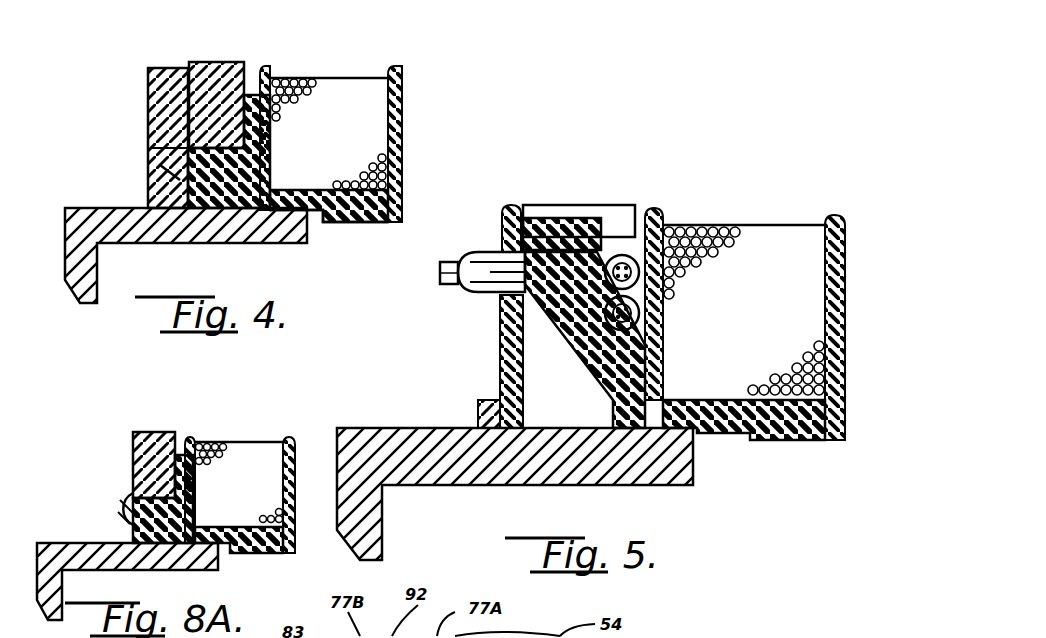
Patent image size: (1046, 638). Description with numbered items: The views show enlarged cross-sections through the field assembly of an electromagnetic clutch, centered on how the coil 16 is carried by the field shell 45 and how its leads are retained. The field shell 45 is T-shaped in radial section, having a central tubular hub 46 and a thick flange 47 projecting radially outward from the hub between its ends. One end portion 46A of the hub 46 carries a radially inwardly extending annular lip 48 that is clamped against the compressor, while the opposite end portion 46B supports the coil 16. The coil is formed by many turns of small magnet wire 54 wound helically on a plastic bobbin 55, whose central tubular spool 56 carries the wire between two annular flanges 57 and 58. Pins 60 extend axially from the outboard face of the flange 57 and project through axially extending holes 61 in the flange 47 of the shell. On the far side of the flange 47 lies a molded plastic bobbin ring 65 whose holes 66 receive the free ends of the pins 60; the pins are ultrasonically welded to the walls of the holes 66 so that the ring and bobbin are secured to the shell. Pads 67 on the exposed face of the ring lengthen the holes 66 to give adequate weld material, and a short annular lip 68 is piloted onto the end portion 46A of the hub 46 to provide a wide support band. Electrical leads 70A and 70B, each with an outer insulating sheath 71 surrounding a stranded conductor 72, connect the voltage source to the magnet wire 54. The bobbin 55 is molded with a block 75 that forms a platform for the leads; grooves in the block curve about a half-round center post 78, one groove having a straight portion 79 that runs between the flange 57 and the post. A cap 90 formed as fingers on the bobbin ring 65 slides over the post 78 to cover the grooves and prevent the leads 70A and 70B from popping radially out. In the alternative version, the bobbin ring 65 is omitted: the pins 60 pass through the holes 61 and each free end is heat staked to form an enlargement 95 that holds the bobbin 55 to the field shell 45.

In FIG. 5, the coil 16 is at (780, 222).
In FIG. 4, the field shell 45 is at (216, 61).
In FIG. 5, the field shell 45 is at (560, 487).
In FIG. 8A, the field shell 45 is at (90, 542).
In FIG. 4, the central tubular hub 46 is at (218, 238).
In FIG. 4, the end portion of the hub 46A is at (85, 207).
In FIG. 5, the end portion of the hub 46A is at (405, 427).
In FIG. 4, the end portion of the hub 46B is at (282, 244).
In FIG. 5, the end portion of the hub 46B is at (650, 487).
In FIG. 4, the flange 47 is at (198, 112).
In FIG. 5, the flange 47 is at (612, 205).
In FIG. 8A, the flange 47 is at (133, 445).
In FIG. 4, the annular lip 48 is at (65, 258).
In FIG. 4, the magnet wire 54 is at (292, 80).
In FIG. 5, the magnet wire 54 is at (700, 226).
In FIG. 4, the bobbin 55 is at (404, 152).
In FIG. 5, the bobbin 55 is at (826, 442).
In FIG. 8A, the bobbin 55 is at (214, 527).
In FIG. 4, the central tubular spool 56 is at (308, 190).
In FIG. 5, the central tubular spool 56 is at (690, 398).
In FIG. 4, the flange 57 is at (268, 70).
In FIG. 5, the flange 57 is at (661, 215).
In FIG. 4, the flange 58 is at (404, 84).
In FIG. 5, the flange 58 is at (838, 218).
In FIG. 4, the pins 60 is at (186, 188).
In FIG. 8A, the holes 61 is at (130, 500).
In FIG. 4, the bobbin ring 65 is at (147, 90).
In FIG. 5, the bobbin ring 65 is at (502, 213).
In FIG. 4, the holes 66 is at (158, 166).
In FIG. 4, the pads 67 is at (155, 148).
In FIG. 5, the annular lip 68 is at (485, 400).
In FIG. 5, the electrical lead 70A is at (612, 322).
In FIG. 5, the electrical lead 70B is at (490, 292).
In FIG. 5, the insulating sheath 71 is at (485, 254).
In FIG. 5, the conductor 72 is at (448, 262).
In FIG. 5, the block 75 is at (600, 378).
In FIG. 5, the half-round center post 78 is at (538, 300).
In FIG. 5, the straight portion 79 is at (678, 278).
In FIG. 5, the cap 90 is at (556, 219).
In FIG. 8A, the enlargement 95 is at (112, 508).